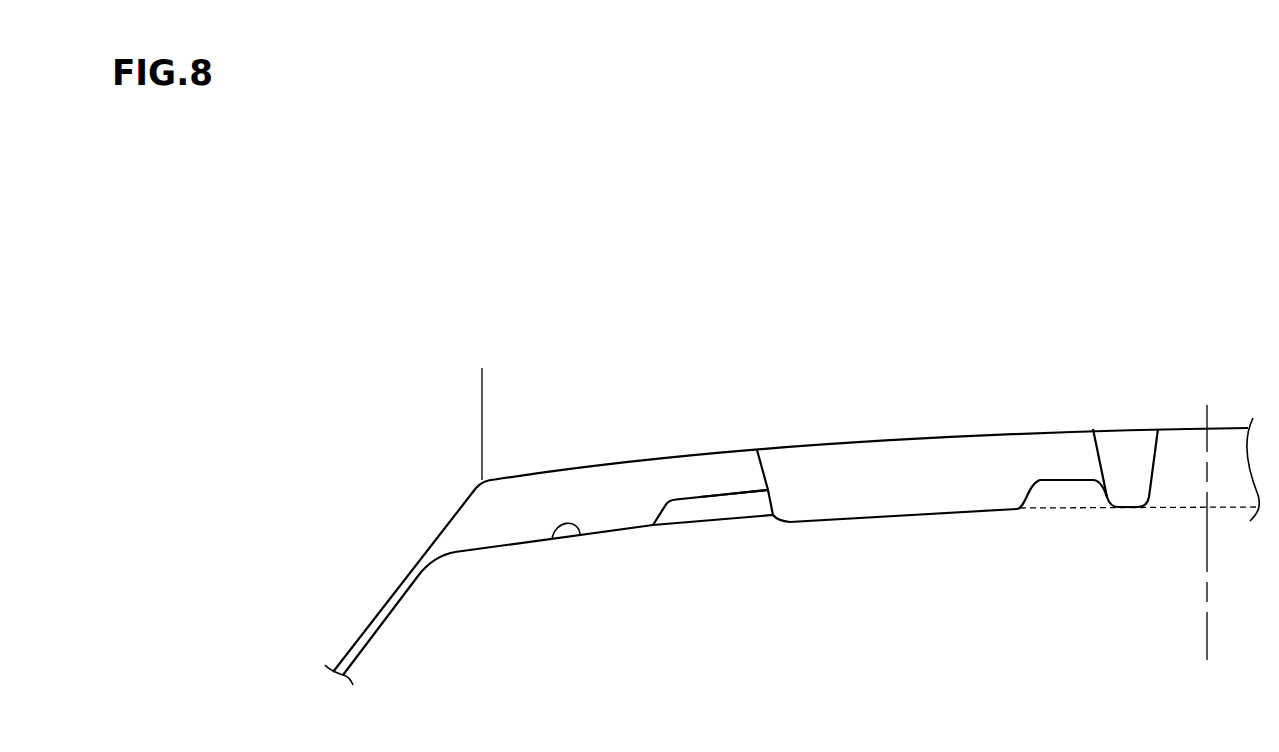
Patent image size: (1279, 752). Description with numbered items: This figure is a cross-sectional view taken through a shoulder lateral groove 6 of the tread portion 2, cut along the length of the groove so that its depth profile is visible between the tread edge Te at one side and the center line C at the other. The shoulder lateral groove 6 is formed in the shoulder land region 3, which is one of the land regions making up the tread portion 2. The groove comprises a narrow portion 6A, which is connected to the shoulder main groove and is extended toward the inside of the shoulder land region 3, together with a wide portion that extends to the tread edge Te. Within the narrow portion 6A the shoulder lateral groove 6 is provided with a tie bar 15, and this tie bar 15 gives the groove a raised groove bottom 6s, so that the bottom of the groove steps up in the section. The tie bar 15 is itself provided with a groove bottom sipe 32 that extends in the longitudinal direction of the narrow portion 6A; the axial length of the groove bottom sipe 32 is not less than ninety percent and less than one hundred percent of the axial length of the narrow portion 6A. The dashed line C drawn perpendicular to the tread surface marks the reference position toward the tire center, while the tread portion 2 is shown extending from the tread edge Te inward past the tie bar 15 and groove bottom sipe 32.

The tread portion 2 is at (1142, 363).
The shoulder land region 3 is at (550, 387).
The shoulder lateral groove 6 is at (595, 490).
The narrow portion 6A is at (680, 475).
The groove bottom sipe 32 is at (718, 510).
The tie bar 15 is at (733, 480).
The raised groove bottom 6s is at (552, 539).
The tread edge Te is at (483, 409).
The tire equator C is at (1209, 517).